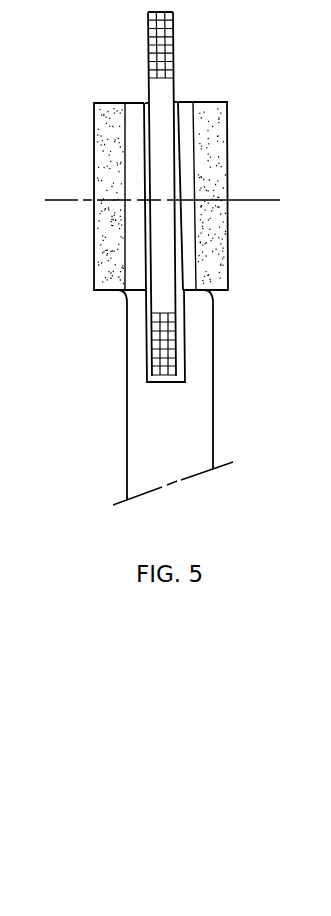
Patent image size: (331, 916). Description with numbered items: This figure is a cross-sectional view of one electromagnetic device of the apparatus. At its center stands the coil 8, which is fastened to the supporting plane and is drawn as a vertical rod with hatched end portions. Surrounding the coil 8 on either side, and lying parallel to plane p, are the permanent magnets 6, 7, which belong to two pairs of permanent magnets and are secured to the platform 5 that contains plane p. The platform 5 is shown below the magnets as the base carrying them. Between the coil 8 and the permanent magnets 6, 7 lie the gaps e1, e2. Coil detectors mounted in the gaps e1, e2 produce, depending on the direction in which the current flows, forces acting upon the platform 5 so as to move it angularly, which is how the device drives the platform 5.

The platform 5 is at (143, 415).
The permanent magnet 6 is at (108, 263).
The permanent magnet 7 is at (220, 263).
The coil 8 is at (160, 44).
The gap e1 is at (147, 100).
The gap e2 is at (175, 100).